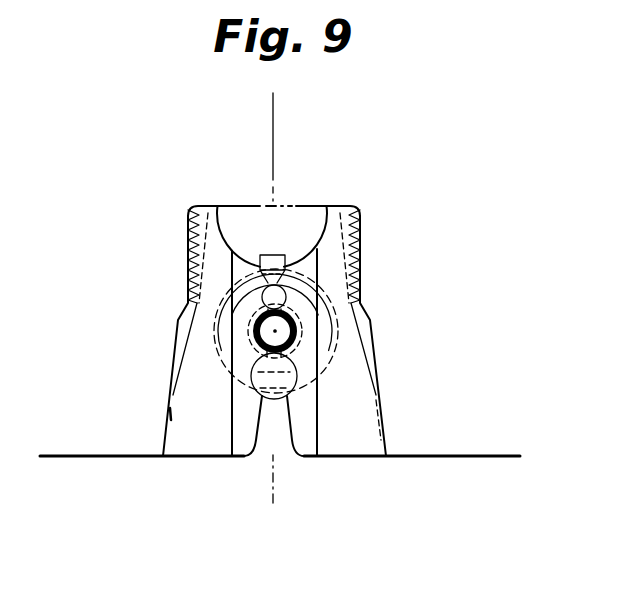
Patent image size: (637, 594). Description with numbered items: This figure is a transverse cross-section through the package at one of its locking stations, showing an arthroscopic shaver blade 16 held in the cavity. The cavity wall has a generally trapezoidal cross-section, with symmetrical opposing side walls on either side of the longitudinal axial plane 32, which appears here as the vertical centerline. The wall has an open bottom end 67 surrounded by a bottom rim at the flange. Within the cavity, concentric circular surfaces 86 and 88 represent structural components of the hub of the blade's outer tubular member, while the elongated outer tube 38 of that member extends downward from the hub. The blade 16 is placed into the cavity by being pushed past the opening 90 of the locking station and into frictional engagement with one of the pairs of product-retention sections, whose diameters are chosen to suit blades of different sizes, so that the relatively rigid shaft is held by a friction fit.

The arthroscopic shaver blade 16 is at (338, 335).
The longitudinal axial plane 32 is at (273, 133).
The concentric circular surface 86 is at (220, 328).
The concentric circular surface 88 is at (262, 322).
The elongated outer tube 38 is at (300, 372).
The open bottom end 67 is at (262, 464).
The opening of locking station 90 is at (283, 463).